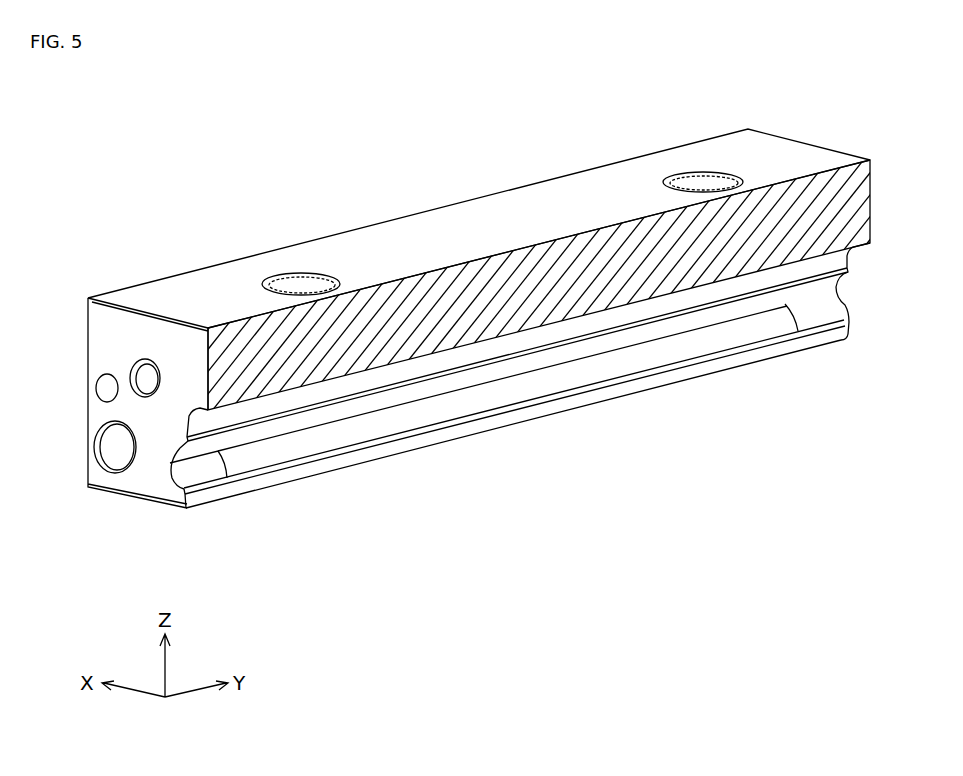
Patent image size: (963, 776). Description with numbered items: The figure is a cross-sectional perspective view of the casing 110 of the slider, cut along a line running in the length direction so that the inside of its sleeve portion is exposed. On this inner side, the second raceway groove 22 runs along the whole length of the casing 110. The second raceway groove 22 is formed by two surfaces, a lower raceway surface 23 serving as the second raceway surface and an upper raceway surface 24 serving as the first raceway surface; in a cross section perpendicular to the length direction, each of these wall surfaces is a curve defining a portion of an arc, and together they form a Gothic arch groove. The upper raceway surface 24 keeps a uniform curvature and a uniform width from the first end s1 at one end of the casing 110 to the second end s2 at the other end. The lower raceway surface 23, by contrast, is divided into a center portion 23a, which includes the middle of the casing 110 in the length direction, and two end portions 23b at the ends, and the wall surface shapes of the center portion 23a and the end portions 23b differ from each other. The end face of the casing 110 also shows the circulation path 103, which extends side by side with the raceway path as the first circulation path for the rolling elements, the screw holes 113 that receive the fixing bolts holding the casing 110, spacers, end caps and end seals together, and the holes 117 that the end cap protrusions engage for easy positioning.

The casing 110 is at (620, 115).
The upper raceway surface 24 is at (575, 350).
The second raceway groove 22 is at (817, 288).
The lower raceway surface 23 is at (868, 391).
The center portion 23a is at (545, 382).
The end portions 23b is at (198, 470).
The first end s1 is at (172, 464).
The second end s2 is at (838, 302).
The screw holes 113 is at (143, 372).
The holes 117 is at (107, 397).
The circulation path 103 is at (124, 466).